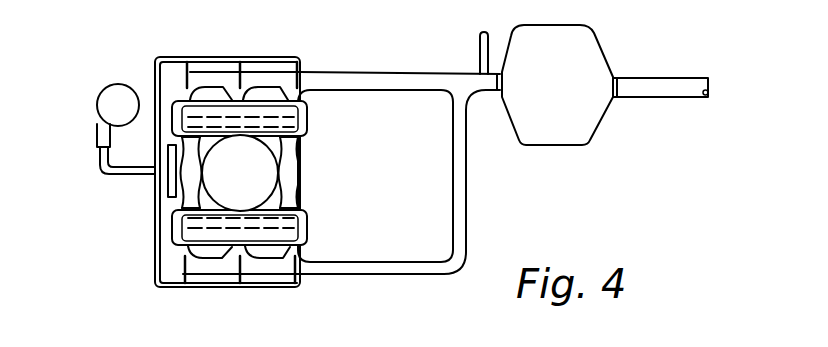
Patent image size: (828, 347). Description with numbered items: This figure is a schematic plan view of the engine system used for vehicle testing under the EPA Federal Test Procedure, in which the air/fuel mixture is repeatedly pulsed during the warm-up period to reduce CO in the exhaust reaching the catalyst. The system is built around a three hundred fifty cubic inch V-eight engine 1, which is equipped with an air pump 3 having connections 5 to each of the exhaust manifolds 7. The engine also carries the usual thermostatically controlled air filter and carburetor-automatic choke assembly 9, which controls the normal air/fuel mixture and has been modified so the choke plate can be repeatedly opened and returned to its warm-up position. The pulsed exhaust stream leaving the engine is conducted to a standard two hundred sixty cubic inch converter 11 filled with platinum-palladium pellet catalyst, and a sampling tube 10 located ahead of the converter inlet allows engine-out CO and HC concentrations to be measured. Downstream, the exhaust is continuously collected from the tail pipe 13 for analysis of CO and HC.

The engine 1 is at (287, 166).
The air pump 3 is at (107, 103).
The connections 5 is at (205, 57).
The exhaust manifolds 7 is at (268, 78).
The air filter and carburetor-automatic choke assembly 9 is at (258, 176).
The sampling tube 10 is at (480, 42).
The converter 11 is at (555, 37).
The tail pipe 13 is at (647, 84).